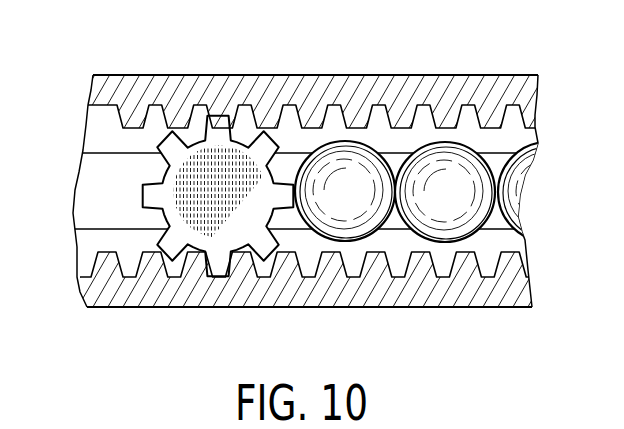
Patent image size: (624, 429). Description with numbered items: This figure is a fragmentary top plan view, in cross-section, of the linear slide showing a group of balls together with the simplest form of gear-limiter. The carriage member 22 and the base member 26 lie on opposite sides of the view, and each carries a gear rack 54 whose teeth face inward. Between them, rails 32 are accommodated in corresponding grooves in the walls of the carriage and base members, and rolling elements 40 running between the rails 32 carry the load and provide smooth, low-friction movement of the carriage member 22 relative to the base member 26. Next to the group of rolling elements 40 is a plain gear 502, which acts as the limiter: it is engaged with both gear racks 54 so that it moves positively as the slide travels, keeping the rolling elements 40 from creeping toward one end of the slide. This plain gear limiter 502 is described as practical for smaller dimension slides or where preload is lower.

The carriage member 22 is at (262, 92).
The base member 26 is at (100, 290).
The gear racks 54 is at (123, 90).
The rolling elements 40 is at (352, 180).
The rails 32 is at (517, 135).
The plain gear 502 is at (235, 217).